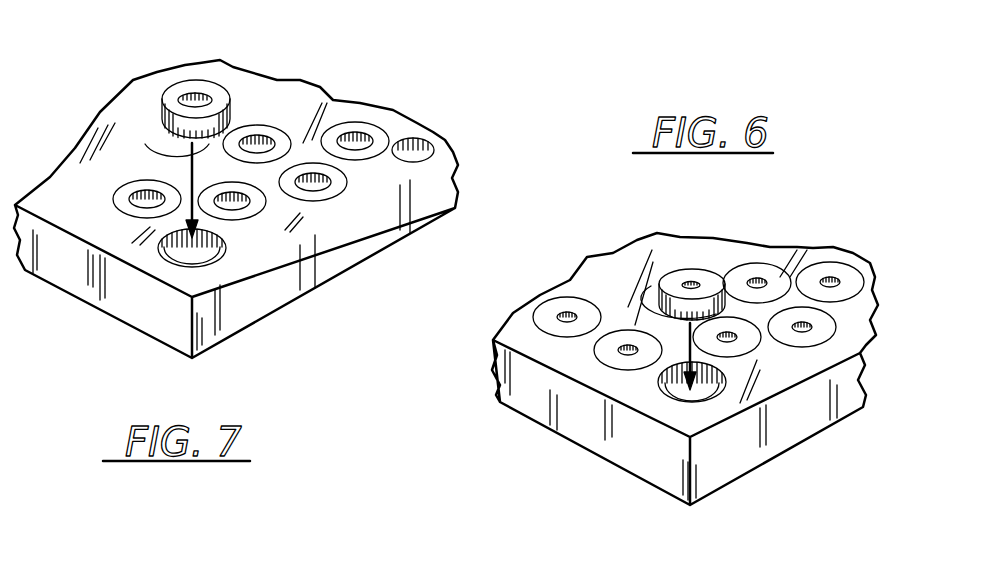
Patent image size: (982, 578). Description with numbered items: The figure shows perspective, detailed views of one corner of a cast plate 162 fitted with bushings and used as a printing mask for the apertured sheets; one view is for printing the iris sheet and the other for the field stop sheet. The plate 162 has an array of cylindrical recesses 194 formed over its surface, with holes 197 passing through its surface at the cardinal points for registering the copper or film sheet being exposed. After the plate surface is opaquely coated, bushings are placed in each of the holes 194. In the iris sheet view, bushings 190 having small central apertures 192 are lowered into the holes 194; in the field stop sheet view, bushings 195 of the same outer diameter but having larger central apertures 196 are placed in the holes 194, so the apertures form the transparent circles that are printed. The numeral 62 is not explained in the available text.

In FIG. 7, the tool holder block 62 is at (375, 228).
In FIG. 7, the cylindrical recesses 194 is at (157, 233).
In FIG. 6, the cylindrical recesses 194 is at (657, 370).
In FIG. 7, the bushings 195 is at (240, 76).
In FIG. 7, the central apertures 196 is at (190, 97).
In FIG. 7, the holes 197 is at (422, 143).
In FIG. 6, the plate 162 is at (597, 278).
In FIG. 6, the bushings 190 is at (759, 258).
In FIG. 6, the central apertures 192 is at (693, 282).